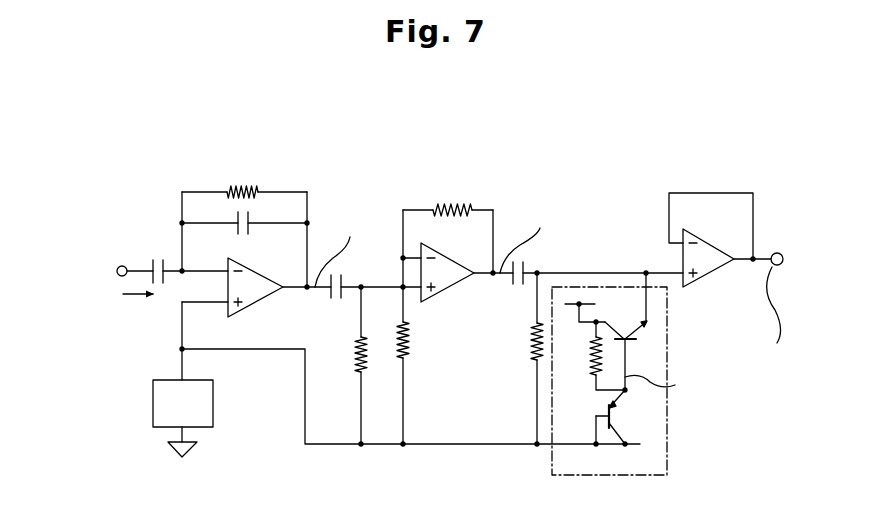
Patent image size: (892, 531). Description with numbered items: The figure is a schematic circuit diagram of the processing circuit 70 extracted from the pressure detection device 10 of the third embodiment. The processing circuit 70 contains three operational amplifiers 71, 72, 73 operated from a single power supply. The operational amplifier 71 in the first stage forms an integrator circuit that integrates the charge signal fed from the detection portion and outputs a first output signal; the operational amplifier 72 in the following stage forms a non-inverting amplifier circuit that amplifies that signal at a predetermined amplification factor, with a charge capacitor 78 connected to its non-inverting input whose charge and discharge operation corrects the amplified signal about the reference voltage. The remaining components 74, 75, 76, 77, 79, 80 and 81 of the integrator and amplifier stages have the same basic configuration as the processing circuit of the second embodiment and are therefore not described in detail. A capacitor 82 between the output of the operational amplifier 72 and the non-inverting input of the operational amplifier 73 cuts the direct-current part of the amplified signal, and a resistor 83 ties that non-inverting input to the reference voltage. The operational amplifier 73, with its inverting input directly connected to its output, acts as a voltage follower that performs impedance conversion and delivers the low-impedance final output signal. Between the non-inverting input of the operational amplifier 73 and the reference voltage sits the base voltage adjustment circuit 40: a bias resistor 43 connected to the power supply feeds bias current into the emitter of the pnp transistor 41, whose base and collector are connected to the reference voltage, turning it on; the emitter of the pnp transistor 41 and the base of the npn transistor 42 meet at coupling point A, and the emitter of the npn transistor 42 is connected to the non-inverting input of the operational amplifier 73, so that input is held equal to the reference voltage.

The pressure detection device 10 is at (638, 153).
The base voltage adjustment circuit 40 is at (672, 450).
The pnp transistor 41 is at (623, 417).
The npn transistor 42 is at (631, 355).
The bias resistor 43 is at (591, 356).
The processing circuit 70 is at (533, 173).
The operational amplifier 71 is at (258, 300).
The operational amplifier 72 is at (448, 290).
The operational amplifier 73 is at (702, 278).
The capacitor 74 is at (159, 262).
The reference voltage source 75 is at (213, 406).
The capacitor 76 is at (244, 231).
The resistor 77 is at (244, 181).
The charge capacitor 78 is at (334, 301).
The resistor 79 is at (344, 365).
The resistor 80 is at (418, 365).
The resistor 81 is at (448, 198).
The capacitor 82 is at (514, 287).
The resistor 83 is at (520, 358).